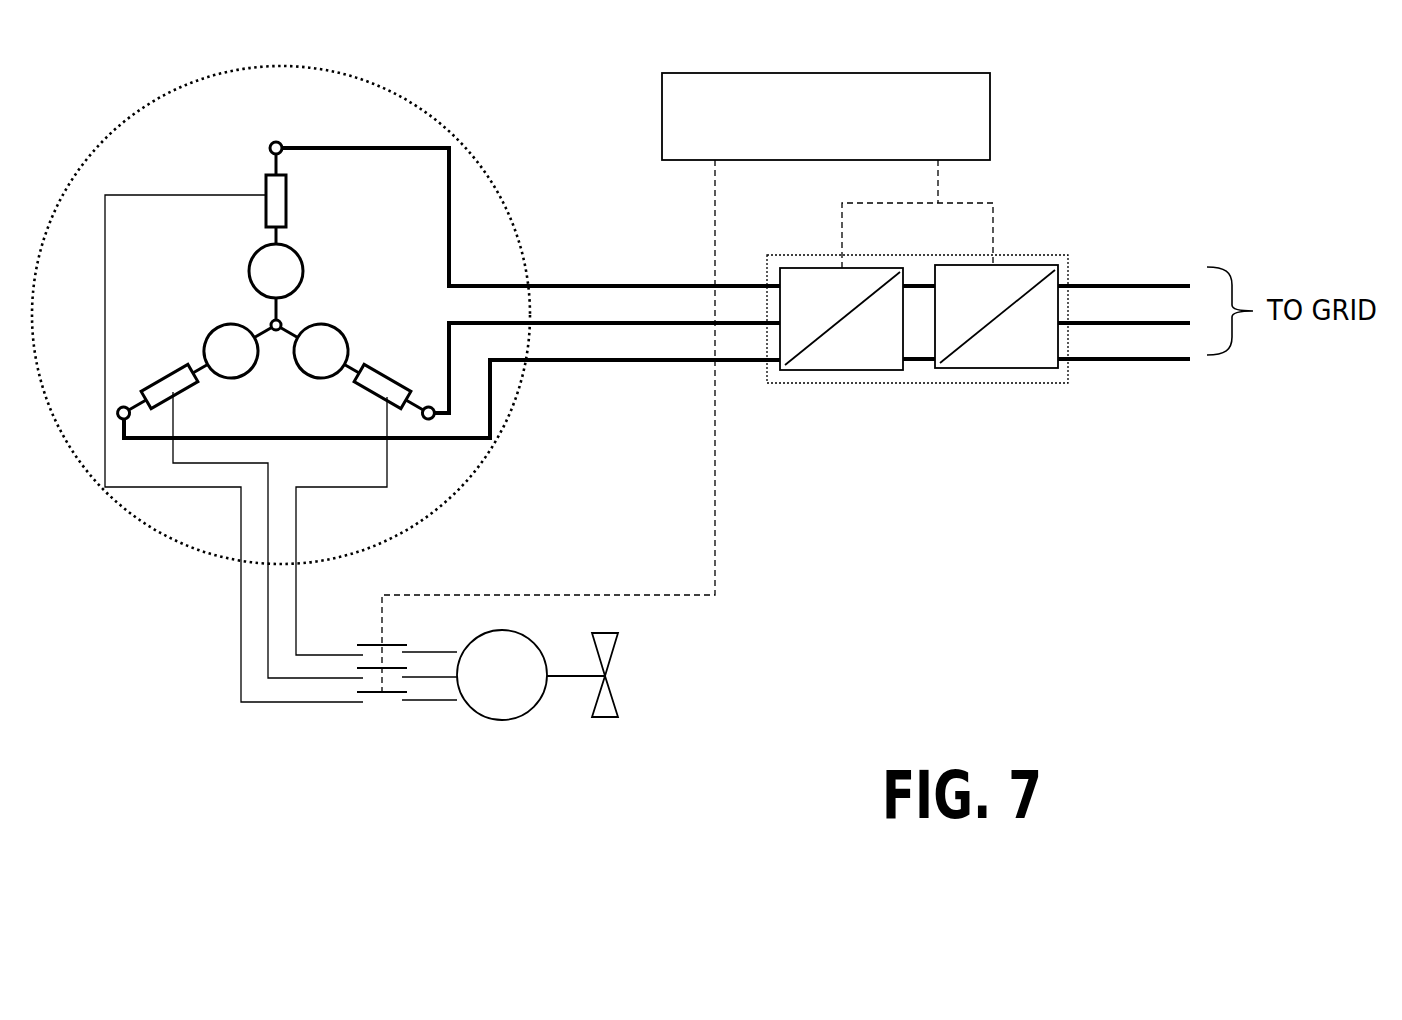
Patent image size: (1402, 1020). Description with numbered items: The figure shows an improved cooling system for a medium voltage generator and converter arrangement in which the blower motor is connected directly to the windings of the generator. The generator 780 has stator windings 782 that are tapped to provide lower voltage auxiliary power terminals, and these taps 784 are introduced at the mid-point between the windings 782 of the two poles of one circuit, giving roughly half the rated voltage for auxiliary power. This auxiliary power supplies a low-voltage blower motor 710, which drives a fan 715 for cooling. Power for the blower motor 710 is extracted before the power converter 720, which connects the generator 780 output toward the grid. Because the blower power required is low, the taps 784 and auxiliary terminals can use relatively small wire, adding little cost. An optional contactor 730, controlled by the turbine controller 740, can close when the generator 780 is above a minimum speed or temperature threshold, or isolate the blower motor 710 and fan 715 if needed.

The blower motor 710 is at (477, 690).
The fan 715 is at (615, 645).
The power converter 720 is at (1043, 253).
The contactor 730 is at (381, 718).
The turbine controller 740 is at (802, 131).
The generator 780 is at (307, 117).
The stator windings 782 is at (287, 210).
The taps 784 is at (266, 196).